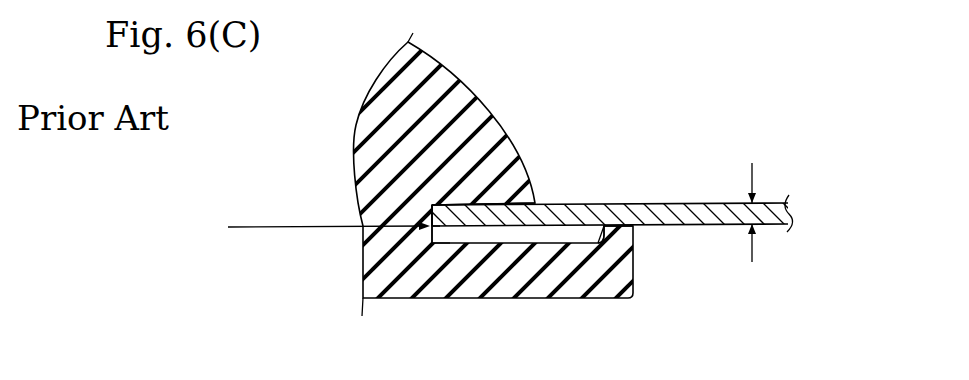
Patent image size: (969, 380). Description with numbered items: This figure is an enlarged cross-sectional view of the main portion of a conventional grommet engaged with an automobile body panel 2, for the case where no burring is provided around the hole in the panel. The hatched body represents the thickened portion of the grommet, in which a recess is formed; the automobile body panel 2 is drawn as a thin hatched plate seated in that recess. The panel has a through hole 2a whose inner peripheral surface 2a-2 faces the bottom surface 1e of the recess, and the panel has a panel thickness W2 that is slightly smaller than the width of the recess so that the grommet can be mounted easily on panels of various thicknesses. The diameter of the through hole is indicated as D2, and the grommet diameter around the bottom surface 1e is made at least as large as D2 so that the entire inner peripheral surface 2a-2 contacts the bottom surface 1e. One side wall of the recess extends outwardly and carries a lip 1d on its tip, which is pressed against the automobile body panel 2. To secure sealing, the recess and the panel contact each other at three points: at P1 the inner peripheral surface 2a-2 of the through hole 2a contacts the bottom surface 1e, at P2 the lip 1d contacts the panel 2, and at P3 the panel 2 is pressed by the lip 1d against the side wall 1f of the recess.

The automobile body panel 2 is at (605, 204).
The side wall of the recess 1f is at (455, 182).
The contact point P3 is at (511, 182).
The lip 1d is at (617, 232).
The panel thickness W2 is at (763, 226).
The diameter of the through hole D2 is at (329, 209).
The inner peripheral surface of the through hole 2a-2 is at (425, 225).
The bottom surface of the recess 1e is at (427, 229).
The through hole 2a is at (423, 245).
The contact point P1 is at (418, 255).
The contact point P2 is at (608, 248).